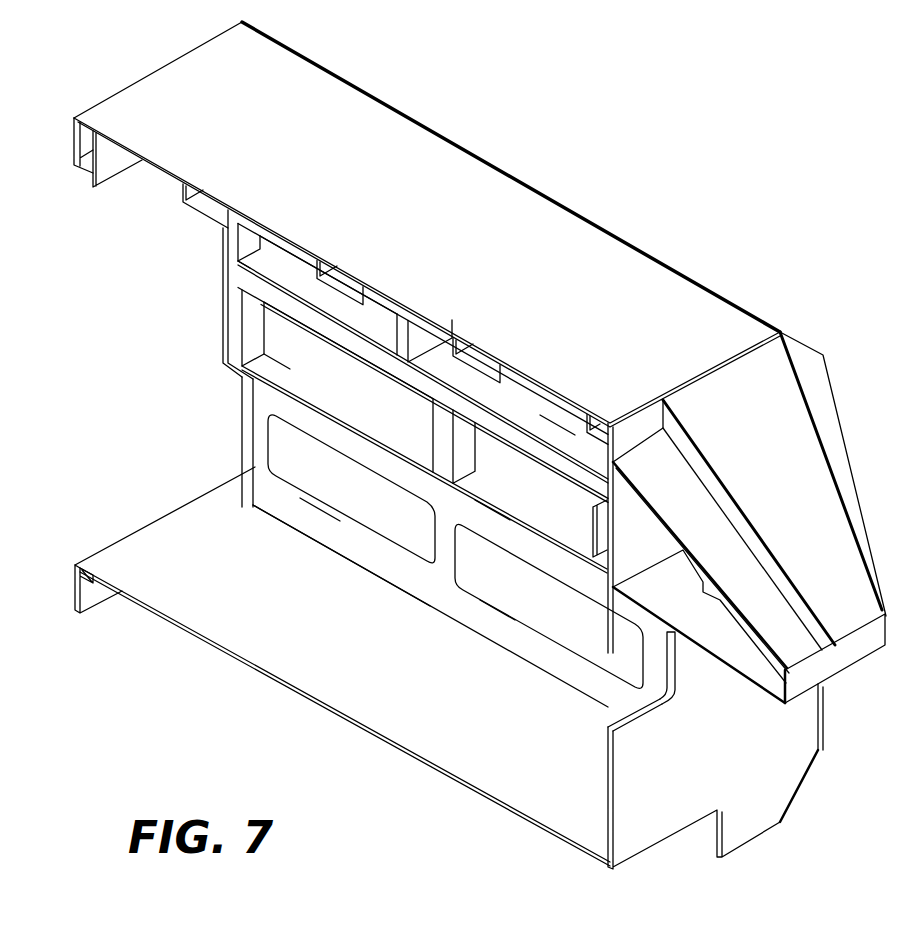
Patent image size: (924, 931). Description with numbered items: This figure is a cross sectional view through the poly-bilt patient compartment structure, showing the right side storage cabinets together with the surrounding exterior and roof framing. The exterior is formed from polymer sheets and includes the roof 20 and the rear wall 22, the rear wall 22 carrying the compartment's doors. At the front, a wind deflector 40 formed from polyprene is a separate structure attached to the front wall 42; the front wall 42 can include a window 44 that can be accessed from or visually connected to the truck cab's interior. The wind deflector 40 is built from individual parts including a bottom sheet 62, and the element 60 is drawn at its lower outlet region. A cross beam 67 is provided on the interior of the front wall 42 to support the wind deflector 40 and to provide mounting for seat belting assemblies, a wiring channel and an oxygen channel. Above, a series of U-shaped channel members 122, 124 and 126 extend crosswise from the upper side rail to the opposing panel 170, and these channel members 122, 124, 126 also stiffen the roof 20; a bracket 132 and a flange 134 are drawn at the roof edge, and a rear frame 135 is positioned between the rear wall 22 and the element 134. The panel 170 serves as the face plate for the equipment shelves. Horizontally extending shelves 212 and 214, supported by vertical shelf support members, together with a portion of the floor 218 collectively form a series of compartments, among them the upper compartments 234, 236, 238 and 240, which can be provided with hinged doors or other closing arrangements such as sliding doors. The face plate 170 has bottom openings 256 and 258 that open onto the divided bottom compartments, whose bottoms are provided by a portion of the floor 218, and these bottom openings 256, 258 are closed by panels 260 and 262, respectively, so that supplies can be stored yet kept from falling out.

The roof 20 is at (404, 217).
The rear wall 22 is at (241, 397).
The wind deflector 40 is at (815, 478).
The front wall 42 is at (721, 769).
The window 44 is at (668, 690).
The outlet box 60 is at (858, 652).
The bottom sheet 62 is at (710, 621).
The cross beam 67 is at (592, 528).
The U-shaped channel member 122 is at (483, 363).
The U-shaped channel member 124 is at (347, 287).
The U-shaped channel member 126 is at (215, 211).
The end bracket 132 is at (598, 418).
The flange 134 is at (103, 176).
The rear frame 135 is at (78, 161).
The face plate 170 is at (270, 502).
The shelf 212 is at (309, 277).
The shelf 214 is at (338, 389).
The floor 218 is at (384, 694).
The compartment 234 is at (241, 270).
The compartment 236 is at (561, 424).
The compartment 238 is at (284, 387).
The compartment 240 is at (496, 513).
The bottom opening 256 is at (497, 619).
The bottom opening 258 is at (327, 515).
The panel 260 is at (561, 609).
The panel 262 is at (361, 498).